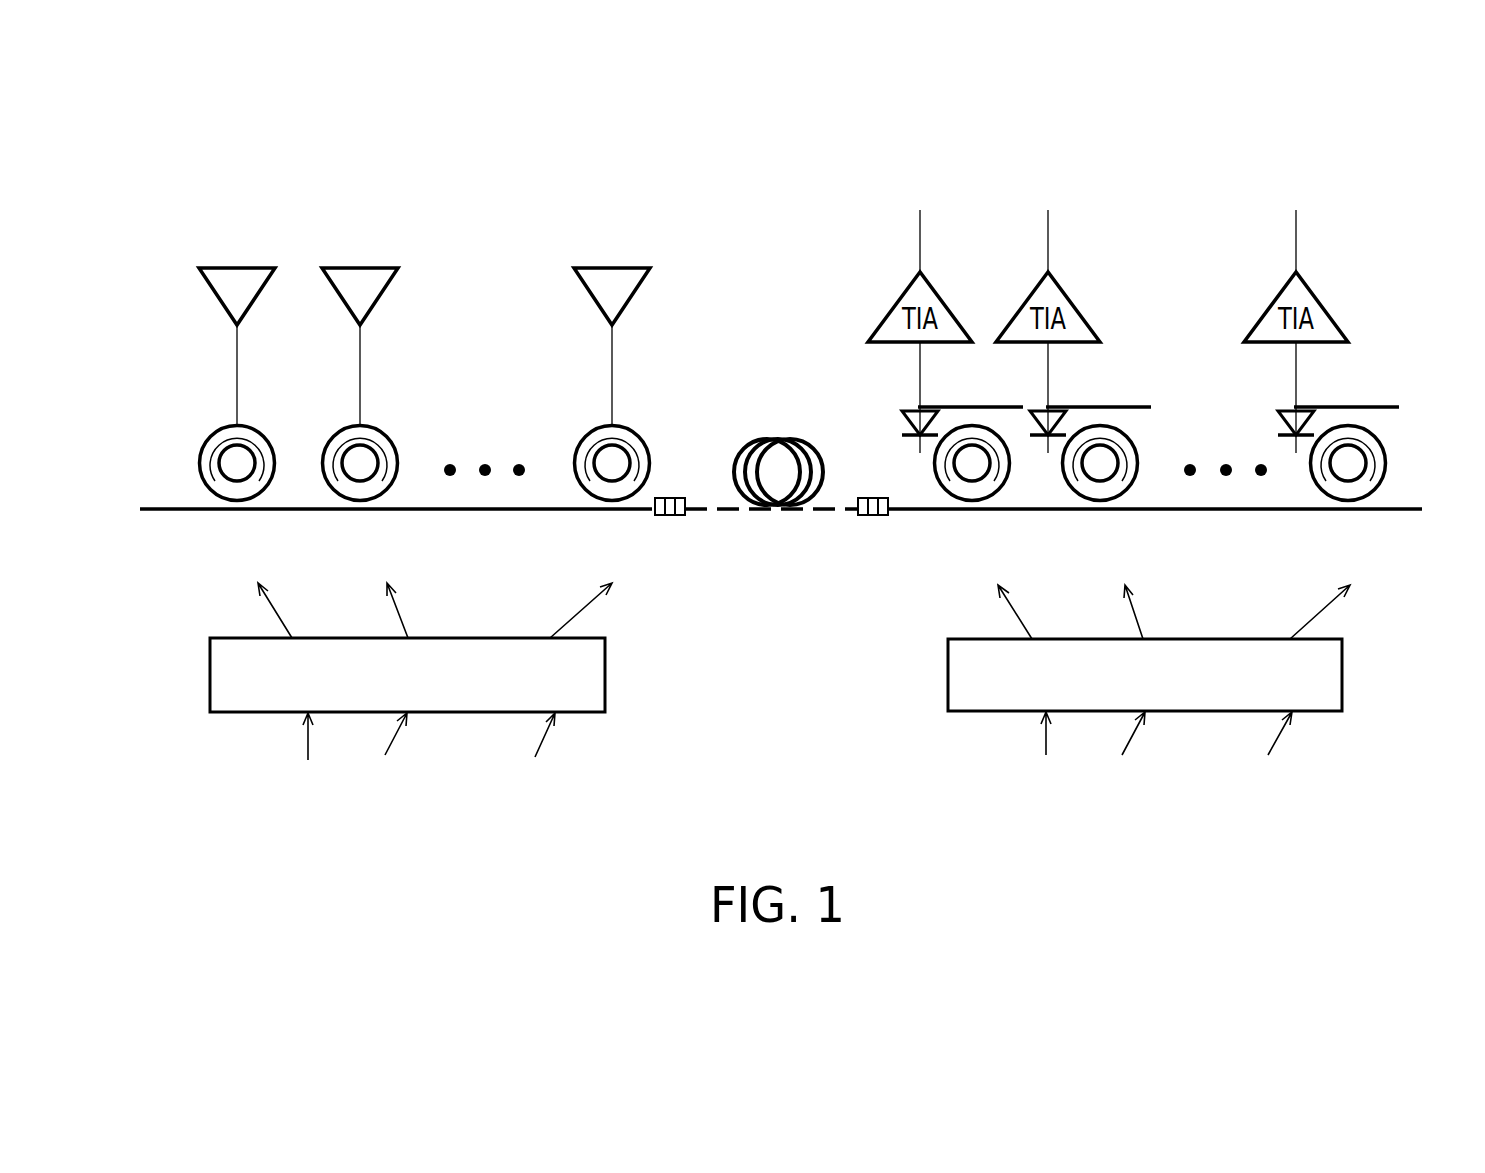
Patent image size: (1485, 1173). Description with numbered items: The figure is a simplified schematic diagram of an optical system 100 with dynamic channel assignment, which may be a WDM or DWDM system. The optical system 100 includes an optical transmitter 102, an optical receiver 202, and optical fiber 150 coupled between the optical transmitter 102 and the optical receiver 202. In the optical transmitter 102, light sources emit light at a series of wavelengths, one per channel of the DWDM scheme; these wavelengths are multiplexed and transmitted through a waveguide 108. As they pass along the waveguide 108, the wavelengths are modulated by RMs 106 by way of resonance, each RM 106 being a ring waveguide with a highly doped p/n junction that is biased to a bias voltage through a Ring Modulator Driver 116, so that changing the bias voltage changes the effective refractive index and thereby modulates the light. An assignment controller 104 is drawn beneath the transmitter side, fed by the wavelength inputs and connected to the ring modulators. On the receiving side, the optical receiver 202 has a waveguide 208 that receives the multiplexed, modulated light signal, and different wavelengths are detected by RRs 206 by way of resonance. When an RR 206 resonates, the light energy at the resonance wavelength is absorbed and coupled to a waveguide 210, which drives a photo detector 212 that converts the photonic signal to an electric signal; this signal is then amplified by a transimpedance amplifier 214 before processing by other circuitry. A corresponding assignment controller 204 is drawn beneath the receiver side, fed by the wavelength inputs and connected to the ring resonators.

The optical system 100 is at (190, 192).
The optical transmitter 102 is at (553, 807).
The assignment controller 104 is at (210, 676).
The RM (ring modulator) 106 is at (200, 462).
The waveguide 108 is at (172, 513).
The Ring Modulator Driver (RMD) 116 is at (218, 297).
The optical fiber 150 is at (775, 390).
The optical receiver 202 is at (1287, 805).
The assignment controller 204 is at (1343, 676).
The RR (ring resonator) 206 is at (1388, 463).
The waveguide 208 is at (1397, 512).
The waveguide 210 is at (1370, 407).
The photo detector 212 is at (1333, 390).
The transimpedance amplifier (TIA) 214 is at (1323, 312).